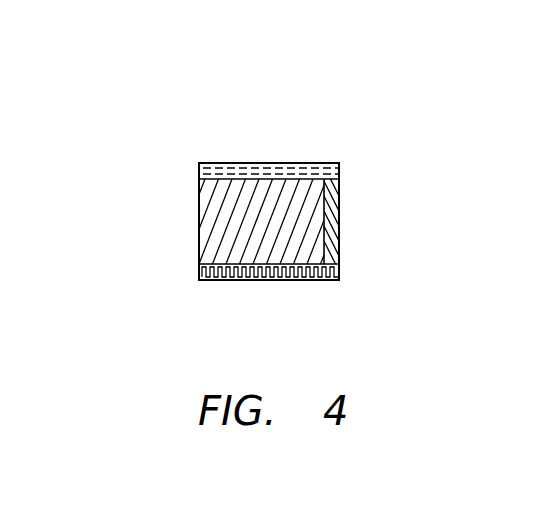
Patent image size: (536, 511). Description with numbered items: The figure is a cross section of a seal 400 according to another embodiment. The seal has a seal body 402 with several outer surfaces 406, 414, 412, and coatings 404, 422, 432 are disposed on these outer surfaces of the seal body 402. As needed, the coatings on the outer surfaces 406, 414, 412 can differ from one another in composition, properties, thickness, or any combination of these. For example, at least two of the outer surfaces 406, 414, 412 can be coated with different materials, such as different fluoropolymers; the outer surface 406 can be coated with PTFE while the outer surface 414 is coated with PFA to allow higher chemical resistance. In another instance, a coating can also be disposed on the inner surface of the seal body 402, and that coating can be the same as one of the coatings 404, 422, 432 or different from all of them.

The seal 400 is at (155, 110).
The seal body 402 is at (303, 242).
The coating 404 is at (327, 237).
The outer surface 406 is at (323, 212).
The outer surface 412 is at (268, 268).
The outer surface 414 is at (273, 180).
The coating 422 is at (215, 272).
The coating 432 is at (340, 170).